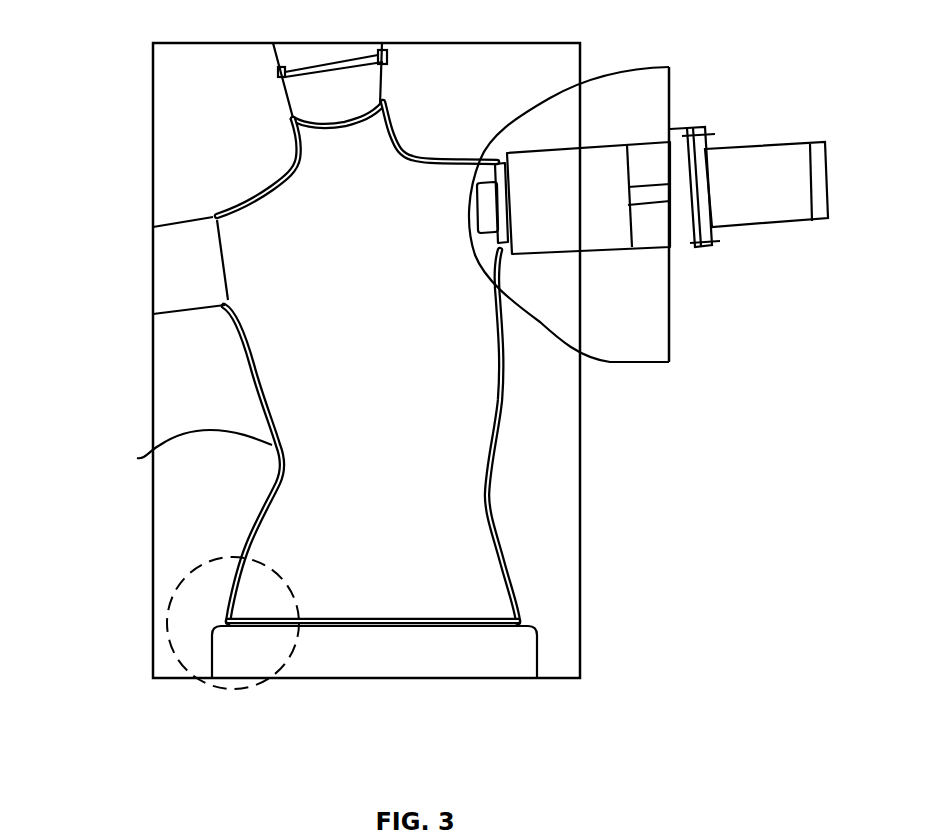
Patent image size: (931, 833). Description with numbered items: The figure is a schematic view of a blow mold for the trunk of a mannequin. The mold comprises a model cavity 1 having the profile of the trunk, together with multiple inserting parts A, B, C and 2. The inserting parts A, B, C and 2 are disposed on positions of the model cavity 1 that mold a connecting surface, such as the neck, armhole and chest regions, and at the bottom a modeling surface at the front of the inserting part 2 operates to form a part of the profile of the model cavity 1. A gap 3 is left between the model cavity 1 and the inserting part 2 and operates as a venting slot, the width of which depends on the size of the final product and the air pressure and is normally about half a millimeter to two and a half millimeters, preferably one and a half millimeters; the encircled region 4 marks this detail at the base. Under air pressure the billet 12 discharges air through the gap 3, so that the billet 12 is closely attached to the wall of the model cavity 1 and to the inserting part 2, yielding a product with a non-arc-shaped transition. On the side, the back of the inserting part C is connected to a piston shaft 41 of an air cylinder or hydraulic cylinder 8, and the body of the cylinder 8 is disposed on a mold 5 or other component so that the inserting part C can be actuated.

The model cavity 1 is at (190, 402).
The billet 12 is at (185, 451).
The inserting part 2 is at (390, 648).
The gap 3 is at (547, 147).
The detail region 4 is at (170, 600).
The piston shaft 41 is at (647, 200).
The mold 5 is at (640, 102).
The hydraulic cylinder 8 is at (752, 180).
The inserting part A is at (365, 88).
The inserting part B is at (188, 240).
The inserting part C is at (570, 233).